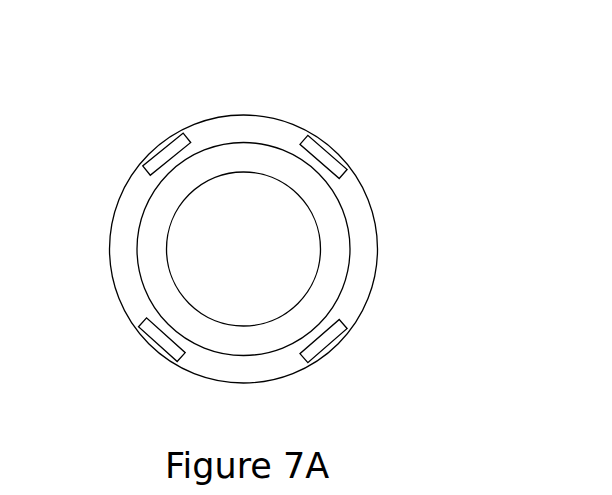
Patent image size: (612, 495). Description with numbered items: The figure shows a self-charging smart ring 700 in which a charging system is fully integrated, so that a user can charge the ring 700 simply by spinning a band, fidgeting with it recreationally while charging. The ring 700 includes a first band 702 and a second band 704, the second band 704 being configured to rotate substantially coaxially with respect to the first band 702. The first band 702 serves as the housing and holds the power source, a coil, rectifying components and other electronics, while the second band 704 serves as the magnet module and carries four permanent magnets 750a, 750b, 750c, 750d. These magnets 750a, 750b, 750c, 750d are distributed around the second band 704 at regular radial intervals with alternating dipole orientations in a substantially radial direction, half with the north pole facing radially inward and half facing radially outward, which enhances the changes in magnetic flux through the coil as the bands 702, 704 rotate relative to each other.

The self-charging smart ring 700 is at (278, 66).
The first band 702 is at (255, 173).
The second band 704 is at (378, 227).
The magnet 750a is at (330, 152).
The magnet 750b is at (337, 343).
The magnet 750c is at (148, 343).
The magnet 750d is at (150, 157).